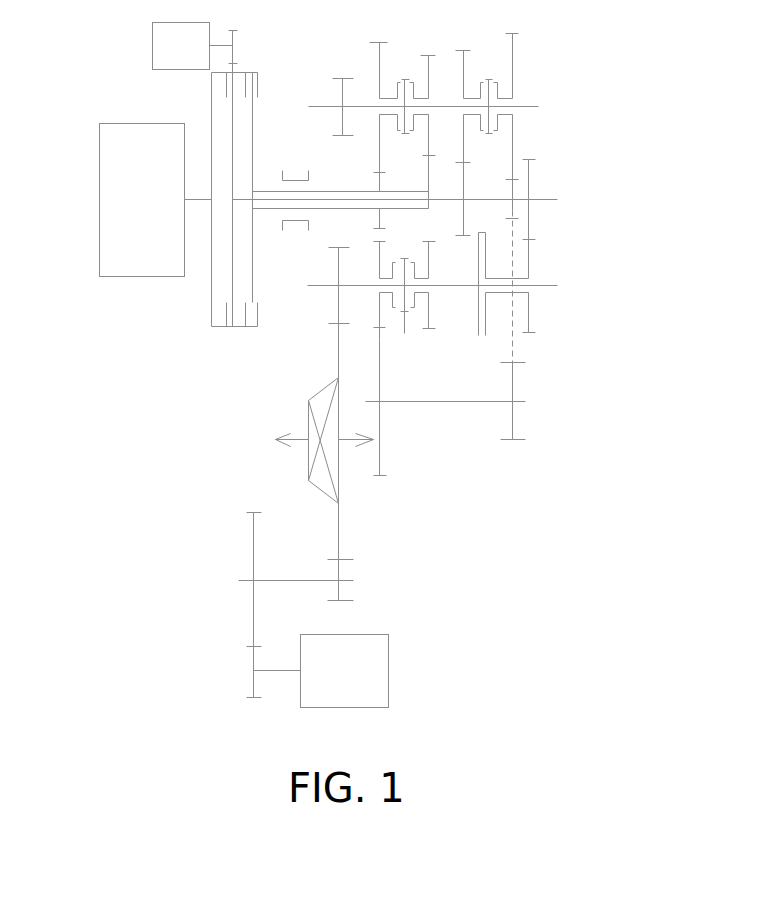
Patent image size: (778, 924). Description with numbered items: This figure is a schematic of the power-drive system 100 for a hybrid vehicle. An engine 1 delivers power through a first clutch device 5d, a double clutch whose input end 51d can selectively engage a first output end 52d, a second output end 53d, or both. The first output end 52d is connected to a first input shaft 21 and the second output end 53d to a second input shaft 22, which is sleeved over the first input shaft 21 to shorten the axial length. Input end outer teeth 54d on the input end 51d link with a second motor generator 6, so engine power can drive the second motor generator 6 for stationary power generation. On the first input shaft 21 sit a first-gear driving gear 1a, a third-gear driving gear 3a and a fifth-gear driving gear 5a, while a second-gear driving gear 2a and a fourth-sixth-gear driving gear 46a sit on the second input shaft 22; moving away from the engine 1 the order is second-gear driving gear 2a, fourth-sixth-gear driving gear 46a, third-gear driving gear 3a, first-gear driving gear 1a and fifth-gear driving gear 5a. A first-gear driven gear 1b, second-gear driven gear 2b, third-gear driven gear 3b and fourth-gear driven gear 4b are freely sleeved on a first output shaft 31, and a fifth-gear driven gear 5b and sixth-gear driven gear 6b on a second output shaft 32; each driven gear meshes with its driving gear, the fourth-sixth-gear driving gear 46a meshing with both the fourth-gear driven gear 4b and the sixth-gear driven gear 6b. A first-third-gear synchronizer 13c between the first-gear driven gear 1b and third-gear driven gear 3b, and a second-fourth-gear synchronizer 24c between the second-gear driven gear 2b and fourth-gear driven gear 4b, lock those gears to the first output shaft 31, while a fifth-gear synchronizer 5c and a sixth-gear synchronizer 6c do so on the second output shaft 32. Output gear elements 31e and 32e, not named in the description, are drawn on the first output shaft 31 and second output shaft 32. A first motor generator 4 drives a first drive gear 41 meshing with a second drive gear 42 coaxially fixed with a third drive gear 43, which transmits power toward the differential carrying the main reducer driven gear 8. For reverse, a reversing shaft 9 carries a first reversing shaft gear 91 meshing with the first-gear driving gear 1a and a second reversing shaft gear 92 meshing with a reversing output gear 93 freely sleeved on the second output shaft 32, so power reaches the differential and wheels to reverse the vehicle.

The power-drive system 100 is at (642, 48).
The engine 1 is at (112, 177).
The first-gear driving gear 1a is at (512, 178).
The first-gear driven gear 1b is at (512, 55).
The second-gear driving gear 2a is at (377, 177).
The second-gear driven gear 2b is at (379, 42).
The third-gear driving gear 3a is at (463, 183).
The third-gear driven gear 3b is at (464, 50).
The first motor generator 4 is at (357, 680).
The fourth-gear driven gear 4b is at (430, 54).
The fifth-gear driving gear 5a is at (528, 220).
The fifth-gear driven gear 5b is at (528, 312).
The fifth-gear synchronizer 5c is at (478, 332).
The first clutch device 5d is at (158, 297).
The second motor generator 6 is at (170, 48).
The sixth-gear driven gear 6b is at (428, 298).
The sixth-gear synchronizer 6c is at (404, 333).
The main reducer driven gear 8 is at (338, 353).
The reversing shaft 9 is at (523, 402).
The first-third-gear synchronizer 13c is at (490, 78).
The first input shaft 21 is at (557, 200).
The second input shaft 22 is at (310, 210).
The second-fourth-gear synchronizer 24c is at (405, 77).
The first output shaft 31 is at (528, 106).
The first output gear 31e is at (342, 78).
The second output shaft 32 is at (557, 285).
The second output gear 32e is at (338, 300).
The first drive gear 41 is at (253, 660).
The second drive gear 42 is at (250, 598).
The third drive gear 43 is at (340, 568).
The fourth-sixth-gear driving gear 46a is at (428, 170).
The input end 51d is at (212, 268).
The first output end 52d is at (232, 290).
The second output end 53d is at (252, 293).
The input end outer teeth 54d is at (232, 73).
The first reversing shaft gear 91 is at (512, 442).
The second reversing shaft gear 92 is at (382, 455).
The reversing output gear 93 is at (378, 312).